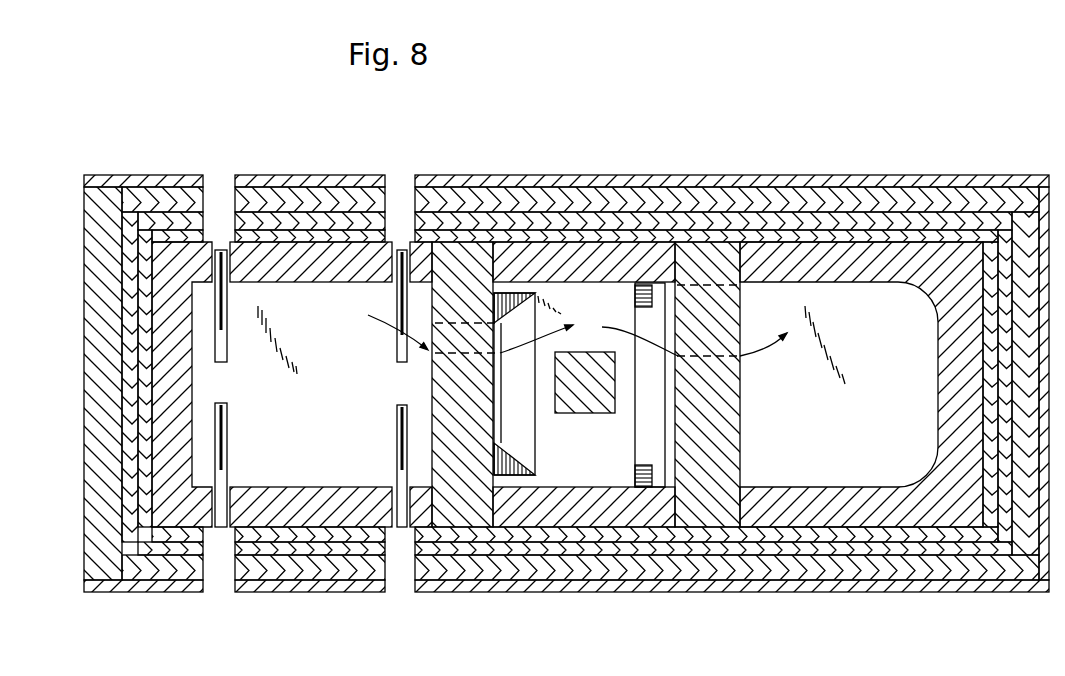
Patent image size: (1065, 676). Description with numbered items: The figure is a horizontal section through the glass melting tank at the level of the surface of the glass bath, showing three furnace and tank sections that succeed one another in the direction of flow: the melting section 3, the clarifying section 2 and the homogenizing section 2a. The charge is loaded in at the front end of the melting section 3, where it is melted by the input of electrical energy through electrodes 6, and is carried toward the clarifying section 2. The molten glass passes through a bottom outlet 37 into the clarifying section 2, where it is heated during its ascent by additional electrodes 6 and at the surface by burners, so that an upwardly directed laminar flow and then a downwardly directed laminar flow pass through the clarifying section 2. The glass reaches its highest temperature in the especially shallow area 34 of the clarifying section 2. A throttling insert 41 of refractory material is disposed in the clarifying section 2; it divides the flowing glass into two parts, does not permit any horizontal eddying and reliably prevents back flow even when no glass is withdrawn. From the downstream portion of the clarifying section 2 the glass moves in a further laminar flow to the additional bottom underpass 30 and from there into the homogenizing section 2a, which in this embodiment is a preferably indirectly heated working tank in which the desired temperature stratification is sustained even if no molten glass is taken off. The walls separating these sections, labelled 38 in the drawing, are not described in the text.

The clarifying section 2 is at (607, 448).
The homogenizing section 2a is at (890, 416).
The melting section 3 is at (345, 408).
The electrodes 6 is at (226, 450).
The bottom underpass 30 is at (638, 463).
The shallow area 34 is at (656, 353).
The bottom outlet 37 is at (497, 428).
The partition wall 38 is at (432, 388).
The throttling insert 41 is at (590, 352).